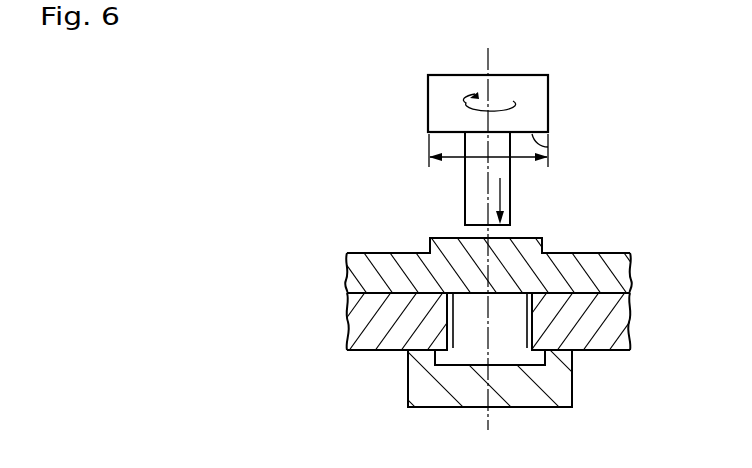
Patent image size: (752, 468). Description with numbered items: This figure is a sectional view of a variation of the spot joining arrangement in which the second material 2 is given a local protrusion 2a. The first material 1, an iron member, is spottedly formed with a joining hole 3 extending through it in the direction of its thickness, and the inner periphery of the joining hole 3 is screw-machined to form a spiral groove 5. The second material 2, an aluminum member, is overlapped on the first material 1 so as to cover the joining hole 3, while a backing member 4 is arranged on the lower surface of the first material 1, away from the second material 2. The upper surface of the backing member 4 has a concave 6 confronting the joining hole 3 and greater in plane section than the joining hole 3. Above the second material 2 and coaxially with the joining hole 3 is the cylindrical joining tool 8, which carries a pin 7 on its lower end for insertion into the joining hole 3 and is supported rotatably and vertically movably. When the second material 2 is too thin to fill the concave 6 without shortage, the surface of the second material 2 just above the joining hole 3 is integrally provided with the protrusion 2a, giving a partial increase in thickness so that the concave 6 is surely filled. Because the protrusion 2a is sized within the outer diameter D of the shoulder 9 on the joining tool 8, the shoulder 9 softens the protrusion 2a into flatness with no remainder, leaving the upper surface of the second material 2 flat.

The first material 1 is at (367, 328).
The second material 2 is at (363, 265).
The protrusion 2a is at (545, 239).
The joining hole 3 is at (472, 333).
The backing member 4 is at (420, 390).
The spiral groove 5 is at (531, 327).
The concave 6 is at (537, 356).
The pin 7 is at (468, 187).
The joining tool 8 is at (540, 101).
The shoulder 9 is at (548, 147).
The outer diameter of the shoulder D is at (478, 152).